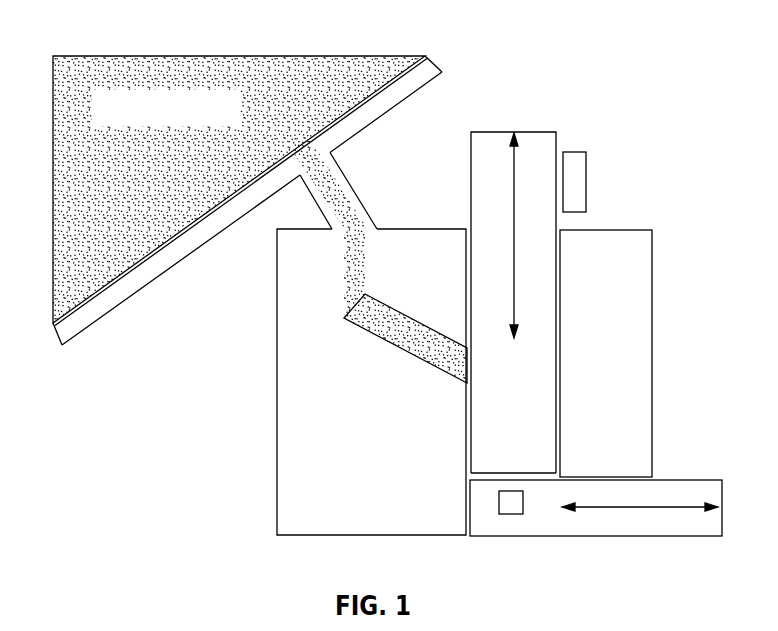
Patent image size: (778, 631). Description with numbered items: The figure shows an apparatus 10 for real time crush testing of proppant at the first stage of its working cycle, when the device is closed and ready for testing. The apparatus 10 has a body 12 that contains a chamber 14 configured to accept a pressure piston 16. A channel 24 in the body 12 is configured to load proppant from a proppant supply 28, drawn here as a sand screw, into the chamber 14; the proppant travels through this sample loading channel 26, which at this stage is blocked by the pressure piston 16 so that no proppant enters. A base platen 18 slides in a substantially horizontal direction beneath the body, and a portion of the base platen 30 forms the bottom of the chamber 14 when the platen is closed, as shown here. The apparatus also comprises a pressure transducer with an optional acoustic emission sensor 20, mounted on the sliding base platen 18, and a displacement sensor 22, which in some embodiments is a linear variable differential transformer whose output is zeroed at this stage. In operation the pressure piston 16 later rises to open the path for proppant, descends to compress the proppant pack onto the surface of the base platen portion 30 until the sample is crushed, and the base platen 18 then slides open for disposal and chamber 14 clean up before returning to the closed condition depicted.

The apparatus 10 is at (673, 65).
The body 12 is at (277, 382).
The chamber 14 is at (470, 237).
The pressure piston 16 is at (523, 130).
The base platen 18 is at (677, 536).
The pressure transducer with optional acoustic emission sensor 20 is at (499, 503).
The displacement sensor 22 is at (586, 182).
The channel 24 is at (344, 278).
The sample loading channel 26 is at (463, 367).
The proppant supply 28 is at (93, 75).
The portion of the base platen 30 is at (522, 477).